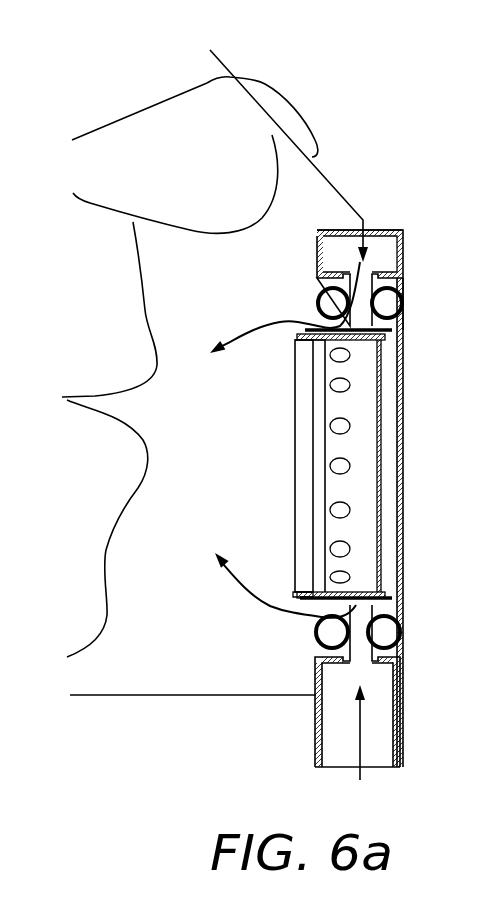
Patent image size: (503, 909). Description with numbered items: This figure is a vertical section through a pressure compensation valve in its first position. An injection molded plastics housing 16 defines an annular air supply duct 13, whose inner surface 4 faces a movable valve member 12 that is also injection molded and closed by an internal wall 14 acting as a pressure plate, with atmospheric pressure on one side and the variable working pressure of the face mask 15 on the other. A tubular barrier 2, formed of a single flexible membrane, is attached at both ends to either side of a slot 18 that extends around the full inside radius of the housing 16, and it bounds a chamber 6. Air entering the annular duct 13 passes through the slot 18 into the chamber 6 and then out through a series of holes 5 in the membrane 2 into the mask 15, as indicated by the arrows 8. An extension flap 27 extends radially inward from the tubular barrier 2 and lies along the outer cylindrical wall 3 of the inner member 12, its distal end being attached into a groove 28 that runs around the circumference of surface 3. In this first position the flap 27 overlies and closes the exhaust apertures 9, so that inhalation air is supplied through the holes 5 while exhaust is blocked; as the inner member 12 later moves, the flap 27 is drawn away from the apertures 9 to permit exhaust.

The tubular barrier 2 is at (403, 368).
The outer cylindrical wall 3 is at (275, 335).
The inner surface of annular air supply duct 4 is at (425, 276).
The holes 5 is at (313, 582).
The chamber 6 is at (303, 652).
The arrows 8 is at (272, 440).
The exhaust apertures 9 is at (343, 428).
The movable valve member 12 is at (270, 452).
The annular air supply duct 13 is at (378, 245).
The internal wall 14 is at (400, 398).
The face mask 15 is at (320, 143).
The housing 16 is at (317, 257).
The slot 18 is at (364, 228).
The extension flap 27 is at (392, 312).
The groove 28 is at (313, 343).